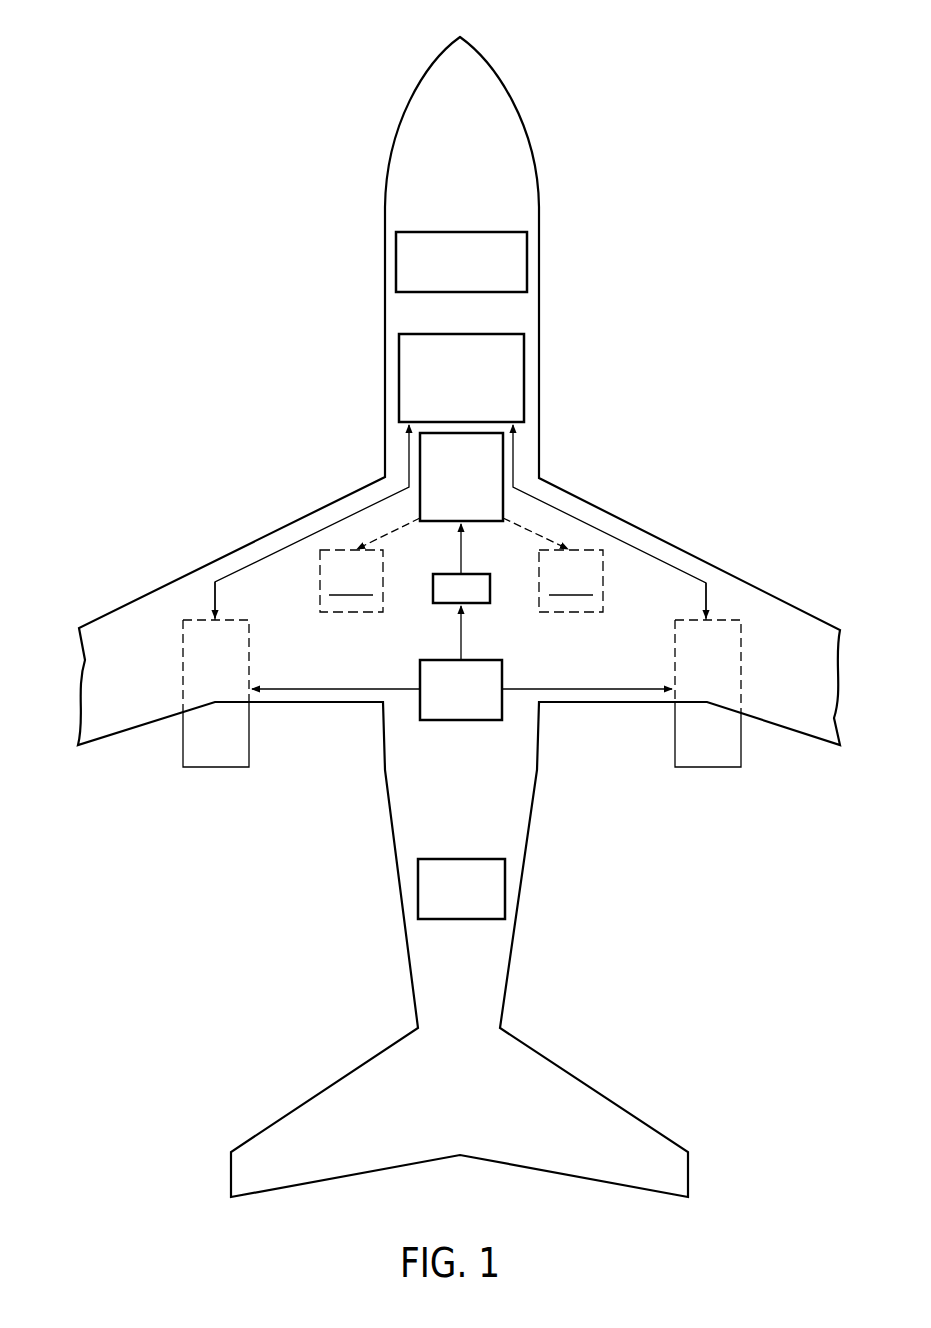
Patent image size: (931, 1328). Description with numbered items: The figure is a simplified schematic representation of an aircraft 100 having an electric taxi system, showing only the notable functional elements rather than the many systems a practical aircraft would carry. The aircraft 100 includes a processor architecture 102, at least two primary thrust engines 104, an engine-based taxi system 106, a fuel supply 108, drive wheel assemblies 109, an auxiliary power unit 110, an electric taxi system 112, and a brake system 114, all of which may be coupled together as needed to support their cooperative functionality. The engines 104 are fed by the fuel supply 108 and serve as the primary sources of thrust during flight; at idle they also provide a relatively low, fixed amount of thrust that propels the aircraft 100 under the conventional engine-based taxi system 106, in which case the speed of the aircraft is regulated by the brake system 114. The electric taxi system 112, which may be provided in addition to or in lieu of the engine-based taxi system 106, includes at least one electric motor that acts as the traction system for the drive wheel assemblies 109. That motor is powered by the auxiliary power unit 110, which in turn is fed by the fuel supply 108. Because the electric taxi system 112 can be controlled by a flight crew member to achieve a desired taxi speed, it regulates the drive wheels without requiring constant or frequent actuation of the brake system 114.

The aircraft 100 is at (199, 106).
The processor architecture 102 is at (396, 263).
The primary thrust engines 104 is at (183, 756).
The engine-based taxi system 106 is at (399, 386).
The fuel supply 108 is at (461, 720).
The wheel assemblies 109 is at (461, 581).
The auxiliary power unit 110 is at (478, 603).
The electric taxi system 112 is at (487, 522).
The brake system 114 is at (418, 888).